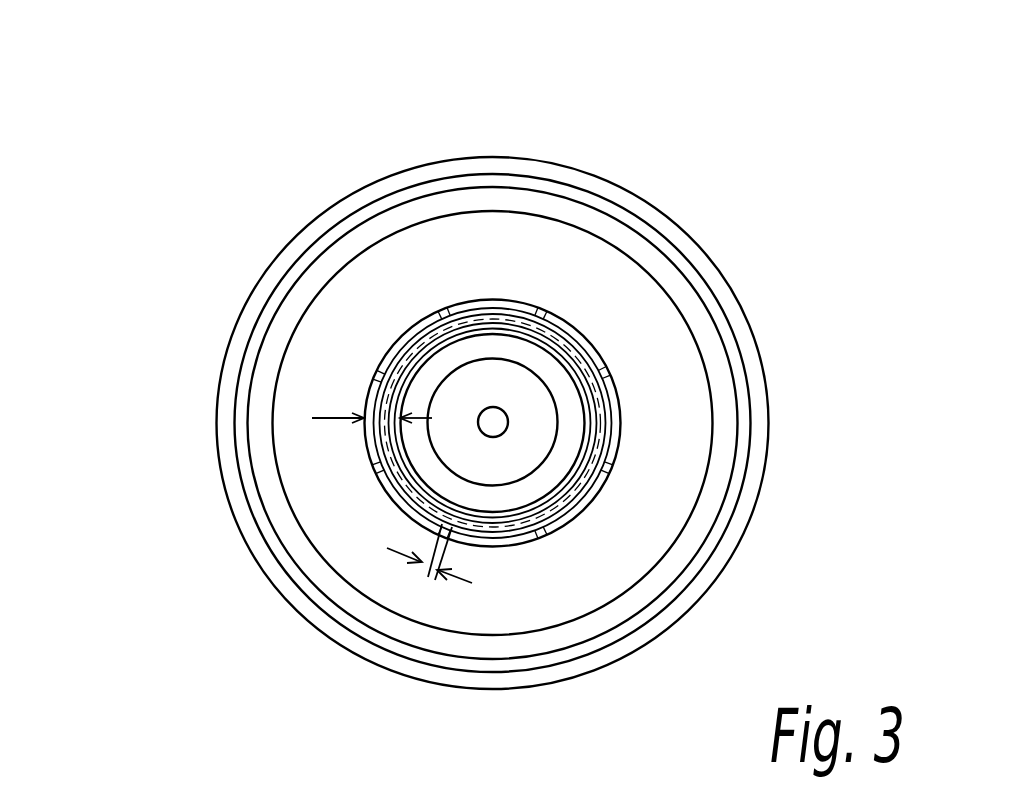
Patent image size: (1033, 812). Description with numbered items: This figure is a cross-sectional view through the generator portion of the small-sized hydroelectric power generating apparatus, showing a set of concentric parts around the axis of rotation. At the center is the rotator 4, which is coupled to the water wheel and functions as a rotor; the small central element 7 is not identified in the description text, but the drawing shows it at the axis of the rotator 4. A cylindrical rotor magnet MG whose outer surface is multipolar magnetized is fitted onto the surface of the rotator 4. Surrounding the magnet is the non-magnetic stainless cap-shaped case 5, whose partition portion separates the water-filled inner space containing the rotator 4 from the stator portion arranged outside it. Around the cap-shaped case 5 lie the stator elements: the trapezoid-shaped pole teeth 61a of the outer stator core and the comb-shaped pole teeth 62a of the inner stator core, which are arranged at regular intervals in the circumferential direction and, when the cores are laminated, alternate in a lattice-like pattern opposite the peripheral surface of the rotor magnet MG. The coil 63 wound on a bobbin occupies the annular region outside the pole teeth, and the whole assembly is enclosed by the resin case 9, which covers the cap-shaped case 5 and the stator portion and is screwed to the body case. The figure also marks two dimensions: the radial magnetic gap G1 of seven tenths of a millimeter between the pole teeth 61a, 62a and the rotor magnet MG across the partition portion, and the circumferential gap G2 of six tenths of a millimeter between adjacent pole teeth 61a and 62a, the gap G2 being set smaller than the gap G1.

The rotator 4 is at (612, 410).
The cap-shaped case 5 is at (537, 420).
The shaft 7 is at (493, 421).
The resin case 9 is at (598, 185).
The pole teeth of the outer stator core 61a is at (400, 337).
The pole teeth of the inner stator core 62a is at (493, 301).
The coil 63 is at (667, 463).
The rotor magnet MG is at (607, 380).
The radial magnetic gap G1 is at (372, 408).
The circumferential gap G2 is at (430, 576).